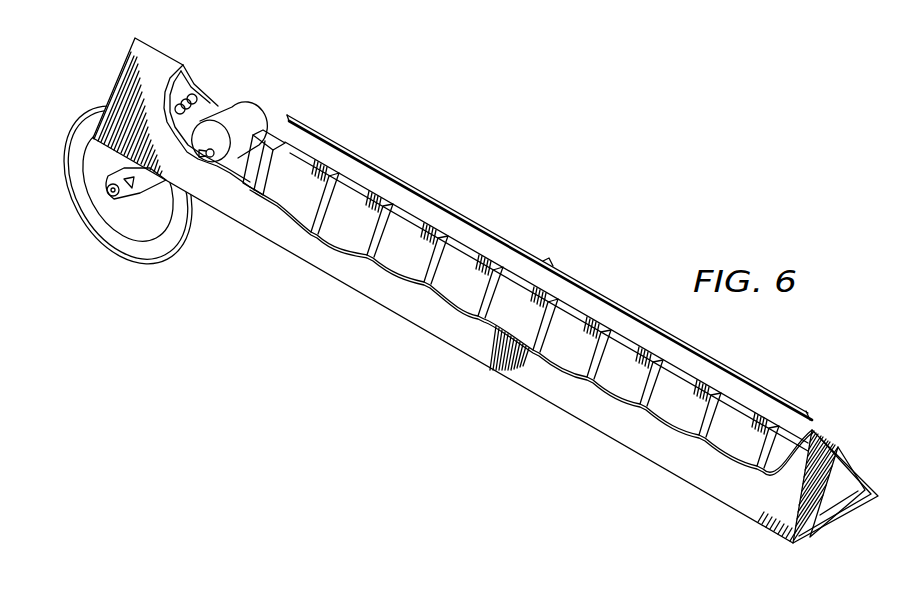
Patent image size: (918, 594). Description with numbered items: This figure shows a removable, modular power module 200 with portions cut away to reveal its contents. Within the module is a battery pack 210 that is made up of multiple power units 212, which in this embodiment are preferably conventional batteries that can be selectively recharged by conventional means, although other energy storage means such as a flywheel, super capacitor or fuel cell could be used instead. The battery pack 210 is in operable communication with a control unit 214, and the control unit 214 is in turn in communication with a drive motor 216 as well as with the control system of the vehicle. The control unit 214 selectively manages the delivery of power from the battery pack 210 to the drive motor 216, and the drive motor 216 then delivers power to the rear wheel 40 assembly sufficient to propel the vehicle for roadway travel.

The rear wheel 40 is at (117, 249).
The modular power module 200 is at (423, 329).
The battery pack 210 is at (553, 265).
The power units 212 is at (282, 197).
The control unit 214 is at (268, 128).
The drive motor 216 is at (232, 114).